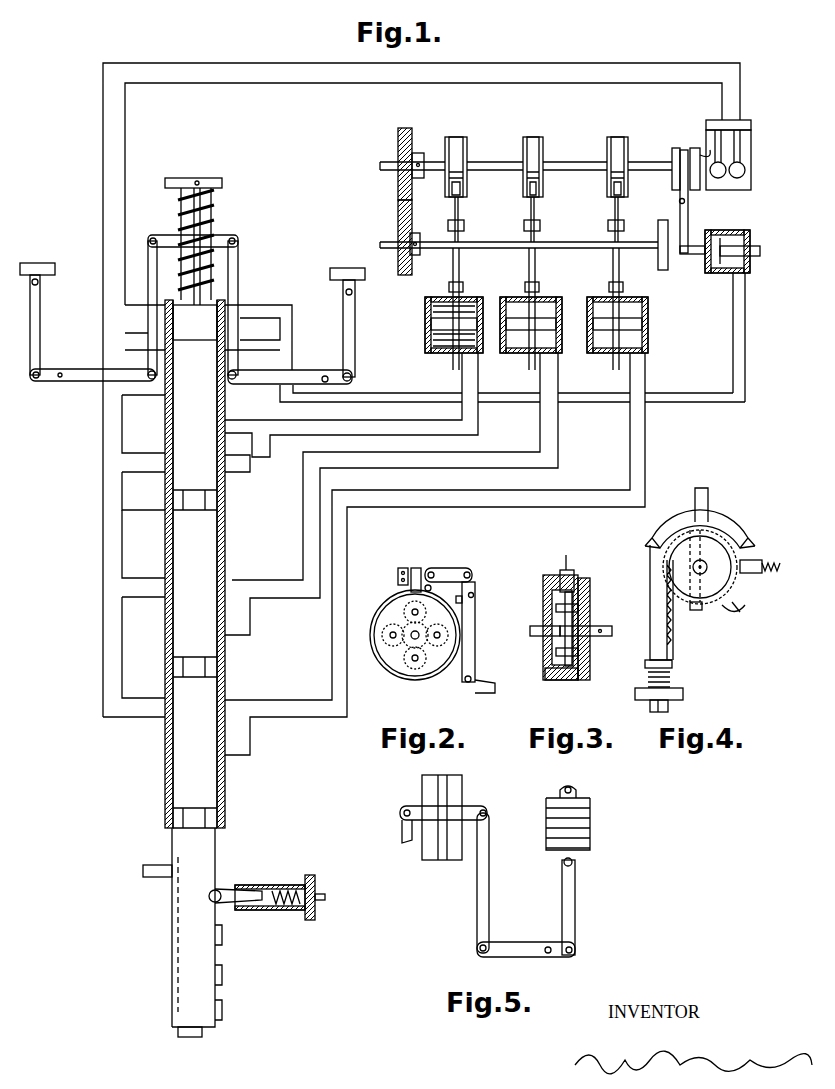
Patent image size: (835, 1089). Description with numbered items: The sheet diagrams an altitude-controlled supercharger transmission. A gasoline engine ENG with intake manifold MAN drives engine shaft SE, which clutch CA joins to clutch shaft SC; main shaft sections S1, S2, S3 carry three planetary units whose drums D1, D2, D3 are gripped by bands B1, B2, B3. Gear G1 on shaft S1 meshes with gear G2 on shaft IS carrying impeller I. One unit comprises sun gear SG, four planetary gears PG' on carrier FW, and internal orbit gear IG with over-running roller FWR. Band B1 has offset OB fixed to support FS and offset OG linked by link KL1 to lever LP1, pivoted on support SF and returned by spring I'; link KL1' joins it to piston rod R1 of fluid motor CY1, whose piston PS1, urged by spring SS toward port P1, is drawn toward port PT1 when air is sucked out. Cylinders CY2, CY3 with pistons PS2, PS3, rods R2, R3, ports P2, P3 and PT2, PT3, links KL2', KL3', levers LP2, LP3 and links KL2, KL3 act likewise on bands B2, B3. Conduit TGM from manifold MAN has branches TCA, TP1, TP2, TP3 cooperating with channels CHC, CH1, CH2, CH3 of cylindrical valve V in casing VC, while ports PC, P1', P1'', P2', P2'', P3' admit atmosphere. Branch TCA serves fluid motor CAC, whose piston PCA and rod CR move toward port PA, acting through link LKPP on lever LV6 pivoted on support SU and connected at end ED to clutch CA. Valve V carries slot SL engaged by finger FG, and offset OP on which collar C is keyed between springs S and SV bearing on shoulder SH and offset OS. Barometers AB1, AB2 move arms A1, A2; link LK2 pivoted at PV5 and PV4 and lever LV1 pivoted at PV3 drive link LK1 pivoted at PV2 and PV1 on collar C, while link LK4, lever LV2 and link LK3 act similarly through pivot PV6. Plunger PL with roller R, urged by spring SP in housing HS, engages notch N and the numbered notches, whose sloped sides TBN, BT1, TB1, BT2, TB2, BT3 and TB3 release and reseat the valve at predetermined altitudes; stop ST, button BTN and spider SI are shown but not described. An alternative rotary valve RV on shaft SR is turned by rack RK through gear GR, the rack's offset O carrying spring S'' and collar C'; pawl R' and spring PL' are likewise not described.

In FIG. 1, the tube or conduit TGM is at (103, 168).
In FIG. 1, the offset OS is at (197, 178).
In FIG. 1, the offset portion OP is at (211, 215).
In FIG. 5, the offset portion OP is at (422, 790).
In FIG. 1, the spring SV is at (214, 195).
In FIG. 1, the shoulder SH is at (212, 300).
In FIG. 1, the spring S is at (212, 274).
In FIG. 1, the port PC is at (165, 314).
In FIG. 1, the collar C is at (237, 233).
In FIG. 5, the collar C is at (444, 802).
In FIG. 1, the pivot PV1 is at (238, 243).
In FIG. 1, the link LK3 is at (148, 236).
In FIG. 5, the link LK3 is at (402, 832).
In FIG. 1, the link LK1 is at (238, 268).
In FIG. 5, the link LK1 is at (489, 893).
In FIG. 1, the encircling channel CHC is at (152, 380).
In FIG. 1, the pivot PV2 is at (235, 380).
In FIG. 1, the link LK4 is at (40, 335).
In FIG. 1, the pivot PV6 is at (58, 380).
In FIG. 1, the lever LV2 is at (76, 382).
In FIG. 1, the pressure responsive member AB2 is at (40, 263).
In FIG. 1, the arm A2 is at (40, 283).
In FIG. 1, the tube branch TCA is at (292, 330).
In FIG. 1, the lever LV1 is at (312, 370).
In FIG. 5, the lever LV1 is at (524, 945).
In FIG. 1, the pivot PV3 is at (330, 380).
In FIG. 1, the pivot PV4 is at (350, 373).
In FIG. 1, the link LK2 is at (355, 319).
In FIG. 5, the link LK2 is at (575, 910).
In FIG. 1, the pivot PV5 is at (352, 293).
In FIG. 1, the pressure responsive member AB1 is at (348, 268).
In FIG. 5, the pressure responsive member AB1 is at (585, 798).
In FIG. 1, the arm A1 is at (343, 289).
In FIG. 5, the arm A1 is at (572, 858).
In FIG. 1, the gear G1 is at (398, 150).
In FIG. 1, the gear G2 is at (398, 205).
In FIG. 1, the shaft section S1 is at (430, 160).
In FIG. 3, the shaft section S1 is at (532, 635).
In FIG. 1, the shaft section S2 is at (497, 160).
In FIG. 3, the shaft section S2 is at (607, 636).
In FIG. 1, the shaft section S3 is at (575, 160).
In FIG. 1, the clutch shaft SC is at (648, 160).
In FIG. 1, the band B1 is at (456, 137).
In FIG. 2, the band B1 is at (378, 656).
In FIG. 3, the band B1 is at (582, 676).
In FIG. 1, the band B2 is at (533, 137).
In FIG. 1, the band B3 is at (616, 137).
In FIG. 1, the drum D1 is at (449, 180).
In FIG. 2, the drum D1 is at (390, 608).
In FIG. 3, the drum D1 is at (552, 592).
In FIG. 1, the drum D2 is at (527, 180).
In FIG. 1, the drum D3 is at (611, 180).
In FIG. 1, the link KL1 is at (475, 219).
In FIG. 2, the link KL1 is at (448, 558).
In FIG. 1, the link KL2 is at (550, 219).
In FIG. 1, the link KL3 is at (633, 219).
In FIG. 1, the lever LP1 is at (464, 228).
In FIG. 2, the lever LP1 is at (475, 632).
In FIG. 1, the lever LP2 is at (540, 228).
In FIG. 1, the lever LP3 is at (624, 228).
In FIG. 1, the impeller shaft IS is at (380, 244).
In FIG. 1, the supercharger impeller I is at (656, 249).
In FIG. 1, the link KL1' is at (473, 272).
In FIG. 2, the link KL1' is at (491, 666).
In FIG. 1, the link KL2' is at (549, 272).
In FIG. 1, the link KL3' is at (635, 272).
In FIG. 1, the piston rod R1 is at (463, 283).
In FIG. 1, the piston rod R2 is at (539, 285).
In FIG. 1, the piston rod R3 is at (625, 292).
In FIG. 1, the fluid motor CY1 is at (428, 352).
In FIG. 1, the fluid motor CY2 is at (520, 352).
In FIG. 1, the fluid motor CY3 is at (605, 355).
In FIG. 1, the piston PS1 is at (425, 325).
In FIG. 1, the piston PS2 is at (549, 340).
In FIG. 1, the piston PS3 is at (642, 328).
In FIG. 1, the port P1 is at (430, 289).
In FIG. 1, the port P2 is at (505, 289).
In FIG. 1, the port P3 is at (593, 289).
In FIG. 1, the port PT1 is at (453, 368).
In FIG. 1, the port PT2 is at (535, 368).
In FIG. 1, the port PT3 is at (630, 352).
In FIG. 1, the spring SS is at (470, 368).
In FIG. 1, the tube branch TP1 is at (282, 470).
In FIG. 4, the tube branch TP1 is at (708, 494).
In FIG. 1, the tube branch TP2 is at (303, 596).
In FIG. 1, the tube branch TP3 is at (318, 716).
In FIG. 1, the clutch CA is at (676, 148).
In FIG. 1, the engine shaft SE is at (700, 150).
In FIG. 1, the lever LV6 is at (688, 216).
In FIG. 1, the fixed support SU is at (680, 201).
In FIG. 1, the lever end ED is at (690, 192).
In FIG. 1, the engine intake manifold MAN is at (746, 120).
In FIG. 1, the gasoline engine ENG is at (751, 160).
In FIG. 1, the link and pivot LKPP is at (685, 256).
In FIG. 1, the fluid motor CAC is at (748, 230).
In FIG. 1, the piston rod CR is at (750, 244).
In FIG. 1, the port PA is at (746, 280).
In FIG. 1, the piston PCA is at (716, 273).
In FIG. 1, the valve casing VC is at (165, 770).
In FIG. 1, the port P1' is at (143, 424).
In FIG. 4, the port P1' is at (695, 616).
In FIG. 1, the port P1'' is at (147, 491).
In FIG. 4, the port P1'' is at (745, 613).
In FIG. 1, the encircling channel CH1 is at (205, 500).
In FIG. 1, the port P2' is at (143, 544).
In FIG. 1, the port P2'' is at (143, 647).
In FIG. 1, the encircling channel CH2 is at (205, 667).
In FIG. 1, the port P3' is at (144, 739).
In FIG. 1, the encircling channel CH3 is at (205, 830).
In FIG. 1, the cylindrical valve V is at (172, 838).
In FIG. 1, the slot SL is at (172, 925).
In FIG. 1, the finger or guide FG is at (143, 870).
In FIG. 1, the stop ST is at (192, 1037).
In FIG. 1, the button BTN is at (218, 888).
In FIG. 1, the notch N is at (232, 890).
In FIG. 1, the roller R is at (259, 880).
In FIG. 1, the spring SP is at (290, 885).
In FIG. 1, the notch side TBN is at (236, 901).
In FIG. 1, the plunger PL is at (285, 920).
In FIG. 1, the housing HS is at (310, 912).
In FIG. 1, the notch side BT1 is at (222, 933).
In FIG. 1, the notch side TB1 is at (220, 950).
In FIG. 1, the notch side BT2 is at (222, 972).
In FIG. 1, the notch side TB2 is at (220, 988).
In FIG. 1, the notch side BT3 is at (222, 1005).
In FIG. 1, the notch side TB3 is at (220, 1022).
In FIG. 2, the planetary gears PG' is at (406, 635).
In FIG. 3, the planetary gears PG' is at (547, 627).
In FIG. 2, the sun gear SG is at (405, 643).
In FIG. 3, the sun gear SG is at (556, 660).
In FIG. 2, the carrier member FW is at (406, 660).
In FIG. 3, the carrier member FW is at (590, 620).
In FIG. 2, the internal orbit gear IG is at (434, 672).
In FIG. 3, the internal orbit gear IG is at (590, 606).
In FIG. 2, the spider SI is at (440, 645).
In FIG. 2, the fixed support FS is at (400, 568).
In FIG. 2, the offset OB is at (410, 585).
In FIG. 3, the offset OB is at (574, 575).
In FIG. 2, the offset OG is at (431, 590).
In FIG. 2, the spring I' is at (472, 589).
In FIG. 2, the fixed support SF is at (474, 597).
In FIG. 3, the roller FWR is at (552, 652).
In FIG. 4, the rotary valve RV is at (660, 533).
In FIG. 4, the shaft SR is at (706, 565).
In FIG. 4, the pawl R' is at (759, 559).
In FIG. 4, the spring PL' is at (768, 578).
In FIG. 4, the gear GR is at (750, 610).
In FIG. 4, the rack RK is at (673, 640).
In FIG. 4, the spring S'' is at (647, 676).
In FIG. 4, the collar C' is at (675, 689).
In FIG. 4, the offset O is at (650, 705).